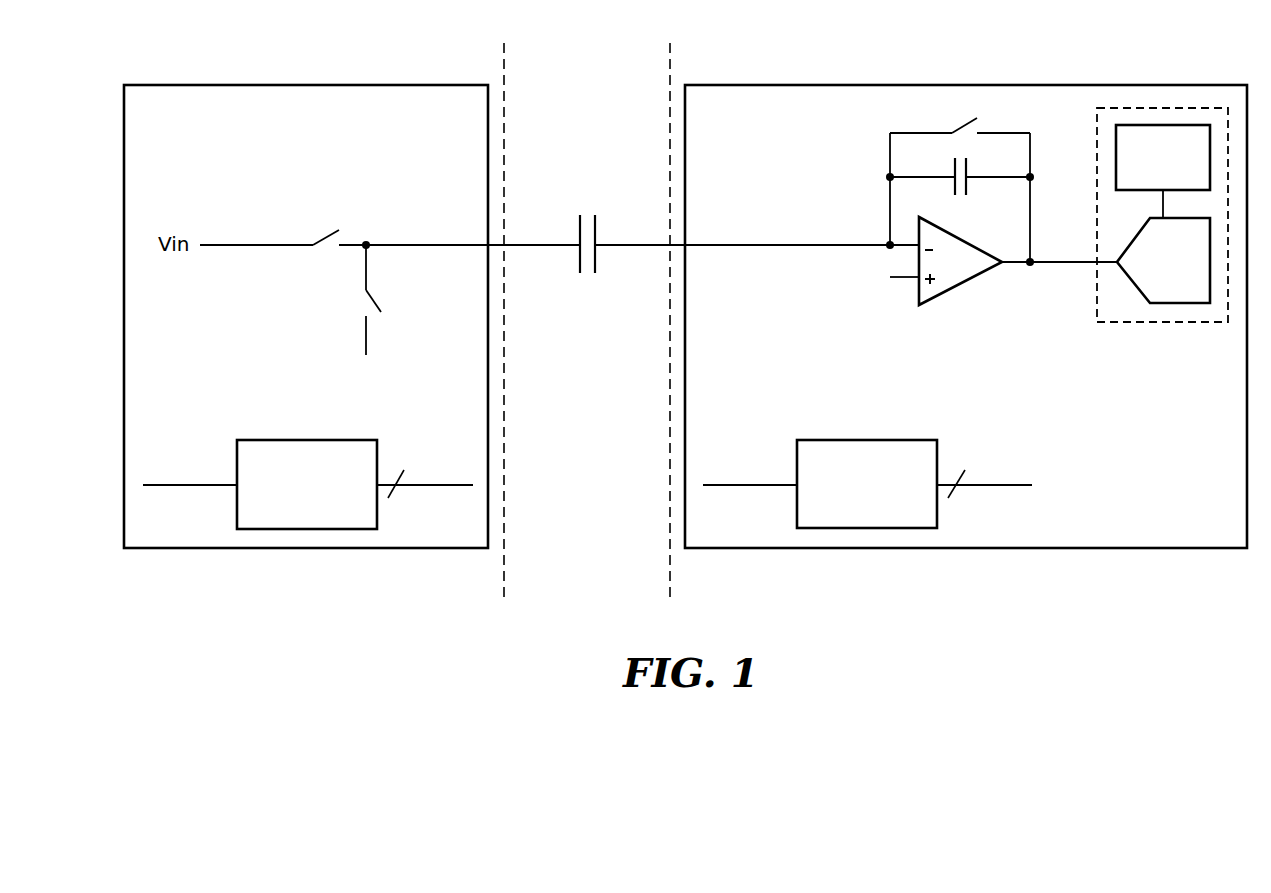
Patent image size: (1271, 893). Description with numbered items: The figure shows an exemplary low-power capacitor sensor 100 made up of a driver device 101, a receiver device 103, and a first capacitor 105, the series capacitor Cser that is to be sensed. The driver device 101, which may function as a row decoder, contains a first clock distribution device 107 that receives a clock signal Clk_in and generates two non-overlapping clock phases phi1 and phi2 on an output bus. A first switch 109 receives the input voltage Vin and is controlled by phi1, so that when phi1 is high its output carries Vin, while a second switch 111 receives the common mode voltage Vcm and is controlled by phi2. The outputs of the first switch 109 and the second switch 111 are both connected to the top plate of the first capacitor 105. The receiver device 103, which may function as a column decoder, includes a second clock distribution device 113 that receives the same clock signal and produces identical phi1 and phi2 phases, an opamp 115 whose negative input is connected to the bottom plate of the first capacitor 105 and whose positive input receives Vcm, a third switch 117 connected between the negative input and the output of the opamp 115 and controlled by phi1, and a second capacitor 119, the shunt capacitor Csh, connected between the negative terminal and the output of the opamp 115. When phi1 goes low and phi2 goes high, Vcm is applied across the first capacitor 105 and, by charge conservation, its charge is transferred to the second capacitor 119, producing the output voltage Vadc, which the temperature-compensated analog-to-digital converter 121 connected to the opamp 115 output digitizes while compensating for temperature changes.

The low-power capacitor sensor 100 is at (232, 32).
The driver device 101 is at (206, 160).
The receiver device 103 is at (782, 162).
The first capacitor 105 is at (578, 236).
The first clock distribution device 107 is at (327, 513).
The first switch 109 is at (322, 238).
The second switch 111 is at (368, 300).
The second clock distribution device 113 is at (888, 513).
The opamp 115 is at (962, 283).
The third switch 117 is at (958, 125).
The second capacitor 119 is at (985, 180).
The temperature-compensated analog-to-digital converter 121 is at (1188, 325).